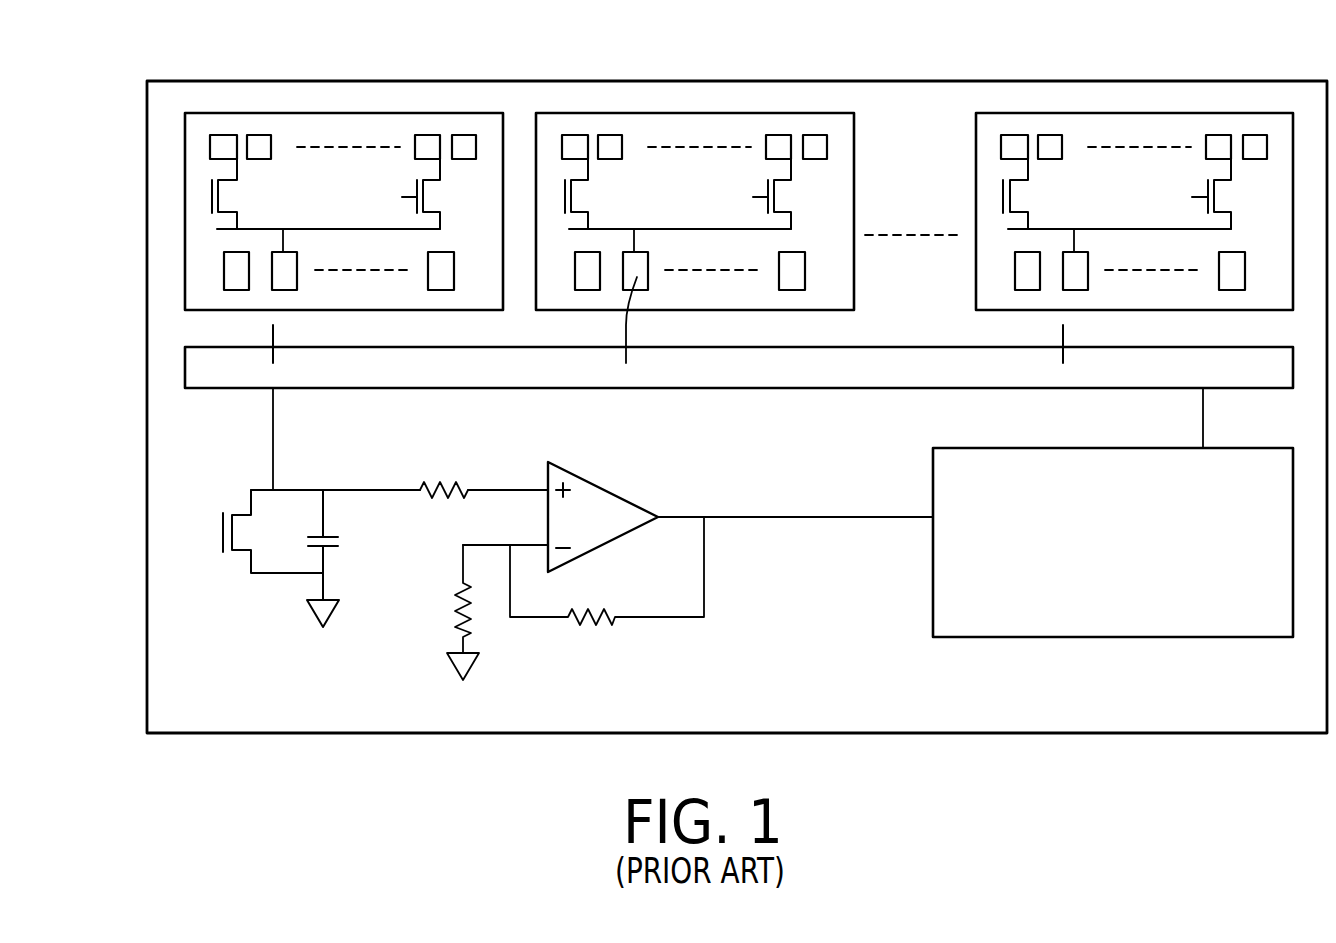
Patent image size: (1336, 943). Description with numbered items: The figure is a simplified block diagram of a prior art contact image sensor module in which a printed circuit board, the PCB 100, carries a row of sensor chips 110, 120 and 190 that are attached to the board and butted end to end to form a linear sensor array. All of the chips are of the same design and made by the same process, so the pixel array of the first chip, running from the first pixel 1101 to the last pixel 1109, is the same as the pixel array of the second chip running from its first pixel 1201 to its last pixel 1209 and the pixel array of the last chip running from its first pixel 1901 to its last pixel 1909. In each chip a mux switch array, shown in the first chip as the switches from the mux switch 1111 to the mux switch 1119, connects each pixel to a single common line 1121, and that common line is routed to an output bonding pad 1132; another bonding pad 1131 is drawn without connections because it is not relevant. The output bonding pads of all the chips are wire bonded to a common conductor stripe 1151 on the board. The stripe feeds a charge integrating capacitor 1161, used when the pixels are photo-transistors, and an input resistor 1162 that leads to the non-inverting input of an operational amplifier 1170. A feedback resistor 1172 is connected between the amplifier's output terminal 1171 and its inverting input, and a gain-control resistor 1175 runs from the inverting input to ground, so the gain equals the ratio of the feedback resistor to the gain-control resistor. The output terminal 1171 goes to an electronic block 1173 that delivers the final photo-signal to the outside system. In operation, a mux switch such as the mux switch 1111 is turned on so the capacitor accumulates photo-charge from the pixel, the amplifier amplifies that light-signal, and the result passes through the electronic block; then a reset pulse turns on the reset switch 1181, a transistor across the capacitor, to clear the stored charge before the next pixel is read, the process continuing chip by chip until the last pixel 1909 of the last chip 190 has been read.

The PCB 100 is at (148, 660).
The sensor chip 110 is at (275, 189).
The sensor chip 120 is at (734, 160).
The sensor chip 190 is at (1108, 160).
The first pixel 1101 is at (210, 153).
The last pixel 1109 is at (457, 135).
The mux switch 1111 is at (212, 198).
The mux switch 1119 is at (423, 210).
The common line 1121 is at (303, 229).
The bonding pad 1131 is at (224, 270).
The output bonding pad 1132 is at (271, 285).
The common conductor stripe 1151 is at (185, 370).
The first pixel 1201 is at (572, 135).
The last pixel 1209 is at (815, 135).
The first pixel 1901 is at (1013, 135).
The last pixel 1909 is at (1253, 134).
The charge integrating capacitor 1161 is at (338, 547).
The input resistor 1162 is at (442, 482).
The operational amplifier 1170 is at (597, 480).
The output terminal 1171 is at (705, 518).
The feedback resistor 1172 is at (600, 627).
The electronic block 1173 is at (995, 637).
The gain-control resistor 1175 is at (453, 622).
The reset switch 1181 is at (223, 532).